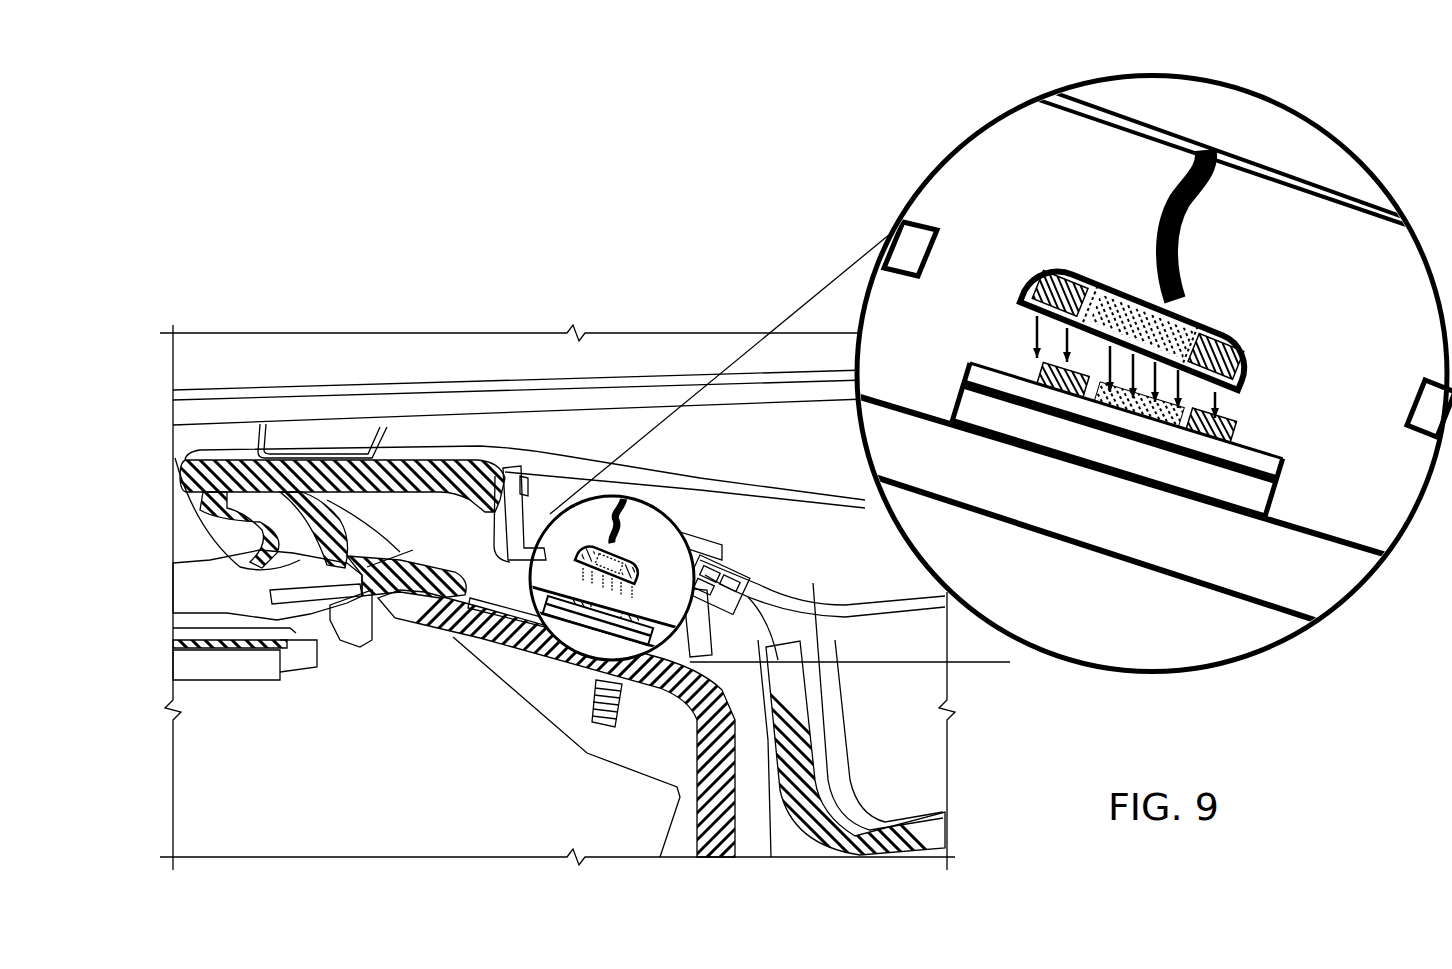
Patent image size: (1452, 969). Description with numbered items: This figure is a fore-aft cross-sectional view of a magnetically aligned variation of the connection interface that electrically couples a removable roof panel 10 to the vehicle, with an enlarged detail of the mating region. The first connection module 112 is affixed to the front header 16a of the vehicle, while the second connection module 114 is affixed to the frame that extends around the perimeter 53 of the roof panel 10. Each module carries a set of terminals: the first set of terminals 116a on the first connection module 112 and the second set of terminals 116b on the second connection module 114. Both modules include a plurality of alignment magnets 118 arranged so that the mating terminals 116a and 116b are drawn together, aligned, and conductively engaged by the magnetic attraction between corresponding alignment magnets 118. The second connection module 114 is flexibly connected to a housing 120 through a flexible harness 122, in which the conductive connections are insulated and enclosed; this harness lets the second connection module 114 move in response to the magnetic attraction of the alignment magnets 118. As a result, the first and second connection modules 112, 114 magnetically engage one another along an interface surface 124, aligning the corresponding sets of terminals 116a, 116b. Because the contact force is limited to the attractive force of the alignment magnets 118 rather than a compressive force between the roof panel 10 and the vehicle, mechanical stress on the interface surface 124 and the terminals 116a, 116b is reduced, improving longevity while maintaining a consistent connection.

The roof panel 10 is at (204, 413).
The perimeter 53 is at (473, 413).
The front header 16a is at (921, 781).
The first connection module 112 is at (896, 526).
The second connection module 114 is at (697, 441).
The first set of terminals 116a is at (1135, 428).
The second set of terminals 116b is at (1140, 303).
The alignment magnets 118 is at (1068, 298).
The housing 120 is at (697, 479).
The flexible harness 122 is at (1192, 186).
The interface surface 124 is at (1016, 330).